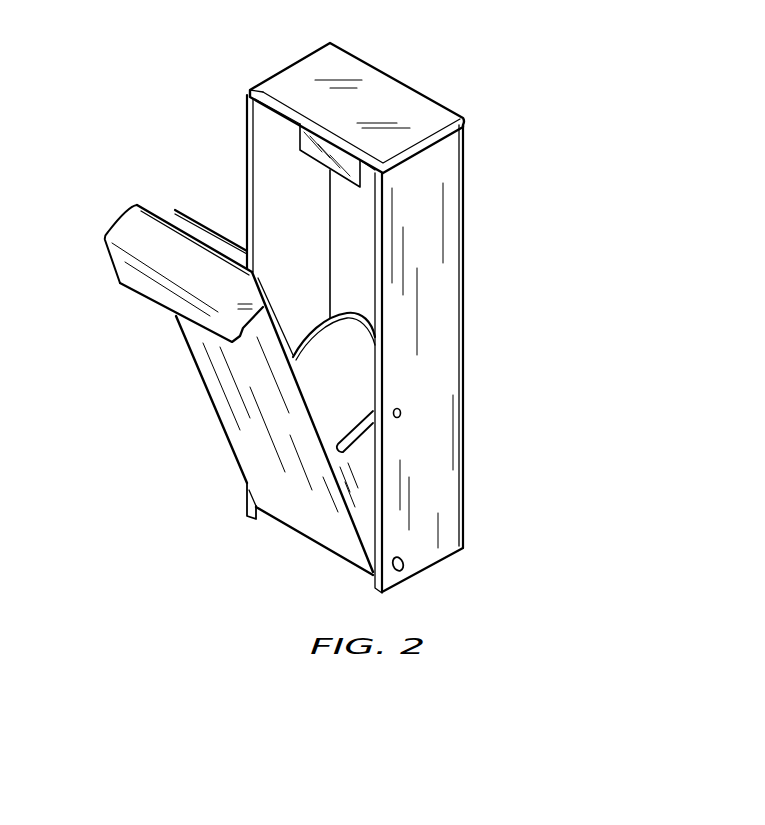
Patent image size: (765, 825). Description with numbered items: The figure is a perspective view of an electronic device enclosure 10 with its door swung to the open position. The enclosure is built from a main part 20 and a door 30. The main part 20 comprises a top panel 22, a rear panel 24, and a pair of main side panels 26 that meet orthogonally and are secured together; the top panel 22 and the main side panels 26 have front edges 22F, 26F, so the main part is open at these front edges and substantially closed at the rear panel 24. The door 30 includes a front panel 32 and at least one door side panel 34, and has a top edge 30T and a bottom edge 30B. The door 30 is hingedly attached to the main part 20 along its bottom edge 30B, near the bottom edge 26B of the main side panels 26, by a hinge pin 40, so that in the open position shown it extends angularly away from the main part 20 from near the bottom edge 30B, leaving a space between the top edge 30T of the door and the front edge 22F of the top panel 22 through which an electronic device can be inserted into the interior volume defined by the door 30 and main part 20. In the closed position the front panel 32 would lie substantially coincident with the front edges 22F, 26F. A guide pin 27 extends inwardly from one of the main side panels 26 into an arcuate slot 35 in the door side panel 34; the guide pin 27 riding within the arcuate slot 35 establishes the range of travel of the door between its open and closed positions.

The electronic device enclosure 10 is at (181, 519).
The main part 20 is at (247, 157).
The top panel 22 is at (387, 95).
The front edge of top panel 22F is at (275, 115).
The rear panel 24 is at (362, 217).
The main side panel 26 is at (260, 182).
The front edge of main side panel 26F is at (247, 220).
The bottom edge of main side panel 26B is at (438, 562).
The guide pin 27 is at (402, 418).
The door 30 is at (200, 373).
The top edge of door 30T is at (152, 207).
The bottom edge of door 30B is at (312, 545).
The front panel 32 is at (258, 470).
The door side panel 34 is at (345, 362).
The arcuate slot 35 is at (367, 433).
The hinge pin 40 is at (402, 572).